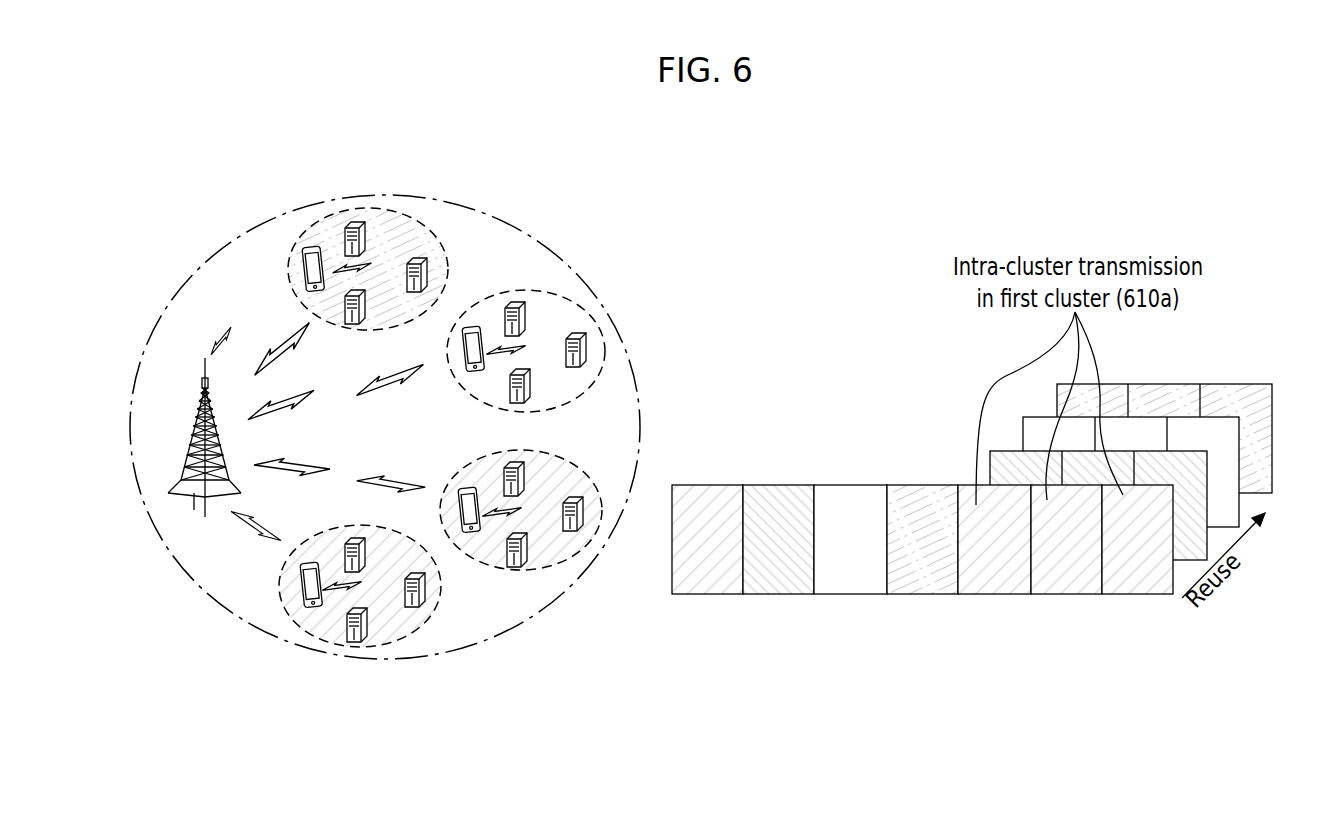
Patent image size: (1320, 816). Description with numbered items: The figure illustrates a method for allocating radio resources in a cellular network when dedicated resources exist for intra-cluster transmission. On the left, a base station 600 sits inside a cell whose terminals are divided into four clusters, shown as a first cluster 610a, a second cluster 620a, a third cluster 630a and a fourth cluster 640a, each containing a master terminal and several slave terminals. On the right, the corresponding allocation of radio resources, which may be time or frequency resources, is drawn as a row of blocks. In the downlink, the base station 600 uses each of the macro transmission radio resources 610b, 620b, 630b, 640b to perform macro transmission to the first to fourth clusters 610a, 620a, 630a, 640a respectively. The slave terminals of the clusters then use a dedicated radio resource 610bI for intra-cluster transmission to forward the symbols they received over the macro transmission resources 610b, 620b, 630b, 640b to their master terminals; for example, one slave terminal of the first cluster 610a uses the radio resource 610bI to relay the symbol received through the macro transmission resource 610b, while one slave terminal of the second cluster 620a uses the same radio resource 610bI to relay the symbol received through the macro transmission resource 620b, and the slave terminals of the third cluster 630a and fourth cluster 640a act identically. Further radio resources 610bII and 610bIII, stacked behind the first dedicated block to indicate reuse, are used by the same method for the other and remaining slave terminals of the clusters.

The base station 600 is at (205, 500).
The first cluster 610a is at (397, 645).
The second cluster 620a is at (557, 563).
The third cluster 630a is at (568, 298).
The fourth cluster 640a is at (325, 213).
The radio resource for macro transmission 610b is at (693, 594).
The radio resource for macro transmission 620b is at (773, 594).
The radio resource for macro transmission 630b is at (847, 594).
The radio resource for macro transmission 640b is at (921, 594).
The dedicated radio resource for intra-cluster transmission 610bI is at (998, 594).
The radio resource for intra-cluster transmission 610bII is at (1080, 594).
The radio resource for intra-cluster transmission 610bIII is at (1163, 594).